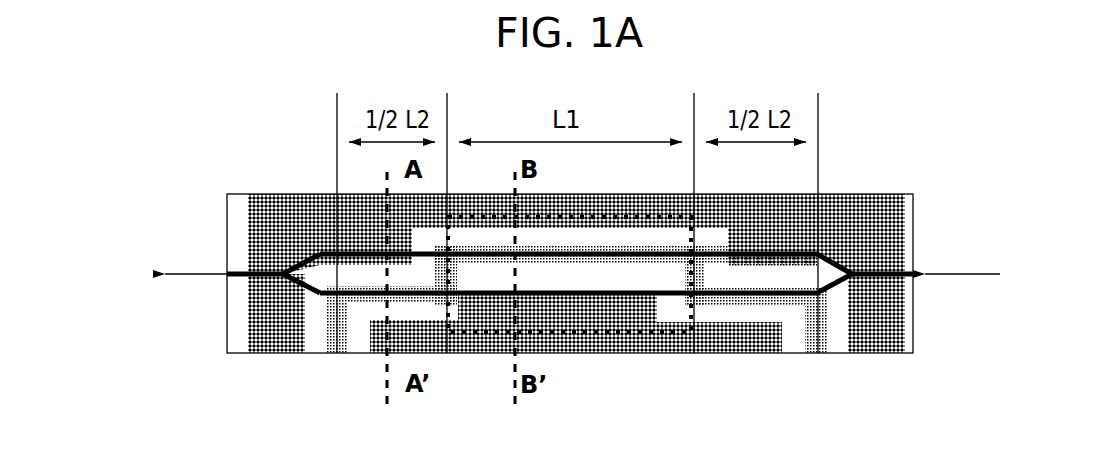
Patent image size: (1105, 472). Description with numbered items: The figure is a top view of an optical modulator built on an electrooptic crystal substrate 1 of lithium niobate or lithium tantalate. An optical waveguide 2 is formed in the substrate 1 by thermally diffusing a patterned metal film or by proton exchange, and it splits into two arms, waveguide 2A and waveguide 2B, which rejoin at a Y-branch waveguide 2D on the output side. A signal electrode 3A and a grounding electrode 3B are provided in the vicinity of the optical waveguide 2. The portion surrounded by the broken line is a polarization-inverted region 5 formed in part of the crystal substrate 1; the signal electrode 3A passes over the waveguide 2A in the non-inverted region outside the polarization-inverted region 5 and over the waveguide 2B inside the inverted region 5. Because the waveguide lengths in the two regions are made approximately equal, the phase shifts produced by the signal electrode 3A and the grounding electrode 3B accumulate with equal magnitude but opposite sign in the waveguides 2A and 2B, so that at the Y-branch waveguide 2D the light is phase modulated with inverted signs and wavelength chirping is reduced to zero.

The crystal substrate 1 is at (865, 194).
The optical waveguide 2 is at (223, 275).
The waveguide 2A is at (607, 297).
The waveguide 2B is at (596, 250).
The Y-branch waveguide 2D is at (283, 272).
The signal electrode 3A is at (867, 353).
The grounding electrode 3B is at (577, 349).
The polarization-inverted region 5 is at (582, 332).